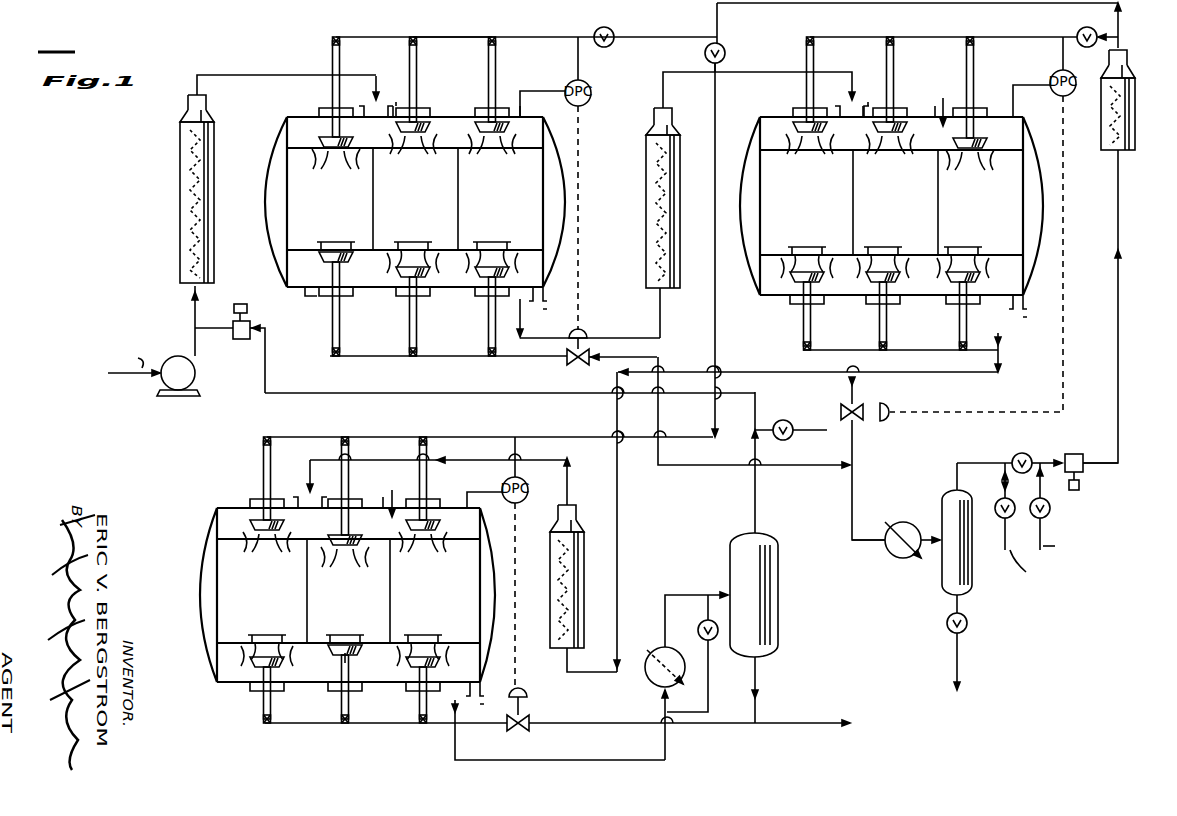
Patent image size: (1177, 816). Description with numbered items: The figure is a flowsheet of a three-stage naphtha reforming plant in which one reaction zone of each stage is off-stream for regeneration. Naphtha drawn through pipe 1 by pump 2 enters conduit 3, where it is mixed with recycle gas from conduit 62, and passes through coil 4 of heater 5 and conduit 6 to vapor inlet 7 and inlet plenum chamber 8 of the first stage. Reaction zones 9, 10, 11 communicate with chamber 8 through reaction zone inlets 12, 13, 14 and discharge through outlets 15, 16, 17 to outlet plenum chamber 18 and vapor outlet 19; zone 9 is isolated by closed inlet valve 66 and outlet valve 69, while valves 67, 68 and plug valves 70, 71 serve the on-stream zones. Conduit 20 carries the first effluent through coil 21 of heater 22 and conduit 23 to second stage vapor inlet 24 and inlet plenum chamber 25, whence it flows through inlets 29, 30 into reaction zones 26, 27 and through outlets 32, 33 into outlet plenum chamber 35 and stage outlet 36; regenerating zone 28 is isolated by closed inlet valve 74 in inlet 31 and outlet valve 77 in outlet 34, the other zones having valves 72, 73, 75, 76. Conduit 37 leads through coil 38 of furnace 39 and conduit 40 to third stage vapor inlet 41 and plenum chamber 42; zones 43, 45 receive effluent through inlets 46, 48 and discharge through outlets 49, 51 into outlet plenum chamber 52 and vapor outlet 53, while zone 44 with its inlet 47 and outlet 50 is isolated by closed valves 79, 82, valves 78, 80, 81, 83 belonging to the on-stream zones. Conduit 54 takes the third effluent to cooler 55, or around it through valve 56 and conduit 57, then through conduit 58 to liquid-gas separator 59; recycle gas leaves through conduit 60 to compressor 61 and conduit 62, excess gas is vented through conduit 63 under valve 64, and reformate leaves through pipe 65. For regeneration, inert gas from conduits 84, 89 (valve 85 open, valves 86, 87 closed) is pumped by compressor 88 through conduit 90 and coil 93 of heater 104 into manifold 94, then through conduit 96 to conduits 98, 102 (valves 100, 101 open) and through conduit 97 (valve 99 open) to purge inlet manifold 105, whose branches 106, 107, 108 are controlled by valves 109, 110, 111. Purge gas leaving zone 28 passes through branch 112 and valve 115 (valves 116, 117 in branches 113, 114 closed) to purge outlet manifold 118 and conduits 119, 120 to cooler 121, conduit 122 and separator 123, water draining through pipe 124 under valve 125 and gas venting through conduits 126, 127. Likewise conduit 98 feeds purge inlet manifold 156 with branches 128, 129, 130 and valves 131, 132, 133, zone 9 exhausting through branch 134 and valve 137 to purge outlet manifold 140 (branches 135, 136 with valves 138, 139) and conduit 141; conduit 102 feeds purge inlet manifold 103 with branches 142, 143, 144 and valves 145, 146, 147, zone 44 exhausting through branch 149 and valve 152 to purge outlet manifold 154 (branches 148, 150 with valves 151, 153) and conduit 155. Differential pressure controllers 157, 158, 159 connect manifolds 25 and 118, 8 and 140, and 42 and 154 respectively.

The pipe 1 is at (145, 378).
The pump 2 is at (162, 388).
The conduit 3 is at (194, 308).
The coil 4 is at (190, 190).
The heater 5 is at (210, 172).
The conduit 6 is at (258, 78).
The first reaction stage vapor inlet 7 is at (362, 104).
The inlet plenum chamber 8 is at (308, 120).
The reaction zone 9 is at (353, 199).
The reaction zone 10 is at (435, 199).
The reaction zone 11 is at (518, 199).
The reaction zone inlet 12 is at (316, 143).
The reaction zone inlet 13 is at (396, 146).
The reaction zone inlet 14 is at (483, 142).
The vapor outlet 15 is at (350, 256).
The reaction zone outlet 16 is at (420, 256).
The reaction zone outlet 17 is at (504, 256).
The outlet plenum chamber 18 is at (306, 284).
The reaction stage vapor outlet 19 is at (545, 294).
The conduit 20 is at (565, 326).
The coil 21 is at (656, 200).
The heater 22 is at (682, 218).
The conduit 23 is at (734, 76).
The second reaction stage vapor inlet 24 is at (842, 100).
The second reaction stage inlet plenum chamber 25 is at (944, 105).
The reaction zone 26 is at (825, 202).
The reaction zone 27 is at (910, 202).
The reaction zone 28 is at (994, 202).
The reaction zone inlet 29 is at (792, 142).
The reaction zone inlet 30 is at (906, 140).
The vapor inlet 31 is at (984, 144).
The reaction zone outlet 32 is at (790, 262).
The reaction zone outlet 33 is at (900, 262).
The vapor outlet 34 is at (982, 262).
The outlet plenum chamber 35 is at (1025, 280).
The reaction stage outlet 36 is at (1021, 305).
The conduit 37 is at (1000, 350).
The coil 38 is at (582, 590).
The furnace 39 is at (562, 650).
The conduit 40 is at (438, 479).
The vapor inlet 41 is at (752, 142).
The third reaction stage inlet plenum chamber 42 is at (399, 496).
The reaction zone 43 is at (278, 591).
The reaction zone 44 is at (363, 591).
The reaction zone 45 is at (450, 591).
The reaction zone inlet 46 is at (250, 534).
The inlet opening 47 is at (366, 532).
The reaction zone inlet 48 is at (440, 532).
The reaction zone outlet 49 is at (280, 656).
The outlet distributor 50 is at (358, 652).
The reaction zone outlet 51 is at (436, 650).
The outlet plenum chamber 52 is at (355, 666).
The third reaction stage vapor outlet 53 is at (478, 690).
The conduit 54 is at (592, 758).
The cooler 55 is at (660, 650).
The valve 56 is at (700, 626).
The conduit 57 is at (710, 668).
The conduit 58 is at (700, 590).
The liquid-gas separator 59 is at (778, 580).
The conduit 60 is at (414, 396).
The compressor 61 is at (258, 302).
The conduit 62 is at (228, 324).
The conduit 63 is at (789, 440).
The valve 64 is at (793, 422).
The pipe 65 is at (760, 668).
The inlet valve 66 is at (348, 142).
The distributor 67 is at (428, 124).
The distributor 68 is at (480, 120).
The outlet valve 69 is at (348, 282).
The plug valve 70 is at (423, 284).
The plug valve 71 is at (478, 287).
The inlet nozzle 72 is at (796, 118).
The inlet nozzle 73 is at (900, 115).
The inlet valve 74 is at (980, 118).
The outlet nozzle 75 is at (792, 292).
The outlet nozzle 76 is at (876, 296).
The outlet valve 77 is at (960, 270).
The inlet nozzle 78 is at (248, 508).
The inlet valve 79 is at (356, 508).
The inlet nozzle 80 is at (436, 508).
The plug valve 81 is at (258, 686).
The outlet valve 82 is at (338, 680).
The plug valve 83 is at (416, 682).
The conduit 84 is at (1069, 478).
The valve 85 is at (1046, 510).
The valve 86 is at (1005, 514).
The valve 87 is at (1020, 455).
The compressor 88 is at (1078, 454).
The conduit 89 is at (1050, 460).
The conduit 90 is at (1119, 375).
The coil 93 is at (1130, 135).
The manifold 94 is at (1120, 12).
The conduit 96 is at (774, 3).
The conduit 97 is at (998, 40).
The conduit 98 is at (550, 34).
The valve 99 is at (1094, 27).
The valve 100 is at (612, 33).
The valve 101 is at (722, 50).
The conduit 102 is at (717, 308).
The purge inlet manifold 103 is at (420, 437).
The heater 104 is at (1105, 135).
The reaction zone purge inlet manifold 105 is at (914, 40).
The branch 106 is at (806, 66).
The branch 107 is at (893, 80).
The branch 108 is at (973, 72).
The valve 109 is at (810, 36).
The valve 110 is at (891, 36).
The valve 111 is at (971, 36).
The purge outlet manifold branch 112 is at (959, 333).
The purge outlet manifold branch 113 is at (887, 323).
The purge outlet manifold branch 114 is at (804, 323).
The valve 115 is at (962, 350).
The valve 116 is at (888, 350).
The valve 117 is at (812, 350).
The purge outlet manifold 118 is at (904, 351).
The conduit 119 is at (856, 442).
The conduit 120 is at (872, 548).
The cooler 121 is at (912, 552).
The conduit 122 is at (934, 530).
The liquid-gas separator 123 is at (972, 580).
The pipe 124 is at (974, 661).
The valve 125 is at (968, 623).
The conduit 126 is at (986, 463).
The conduit 127 is at (1000, 545).
The branch 128 is at (333, 64).
The branch 129 is at (417, 68).
The branch 130 is at (496, 66).
The valve 131 is at (336, 30).
The valve 132 is at (415, 30).
The valve 133 is at (494, 30).
The purge outlet manifold branch 134 is at (331, 332).
The manifold branch 135 is at (406, 318).
The manifold branch 136 is at (486, 333).
The valve 137 is at (330, 358).
The valve 138 is at (419, 352).
The valve 139 is at (495, 358).
The purge outlet manifold 140 is at (380, 358).
The conduit 141 is at (720, 465).
The branch 142 is at (262, 470).
The branch 143 is at (348, 472).
The branch 144 is at (427, 476).
The valve 145 is at (266, 437).
The valve 146 is at (346, 437).
The valve 147 is at (428, 444).
The purge outlet manifold branch 148 is at (264, 708).
The purge outlet manifold branch 149 is at (349, 715).
The purge outlet manifold branch 150 is at (418, 708).
The valve 151 is at (268, 728).
The valve 152 is at (348, 728).
The valve 153 is at (424, 728).
The purge outlet manifold 154 is at (320, 738).
The conduit 155 is at (742, 728).
The purge inlet manifold 156 is at (432, 37).
The differential pressure controller 157 is at (1040, 70).
The differential pressure controller 158 is at (588, 80).
The differential pressure controller 159 is at (522, 480).